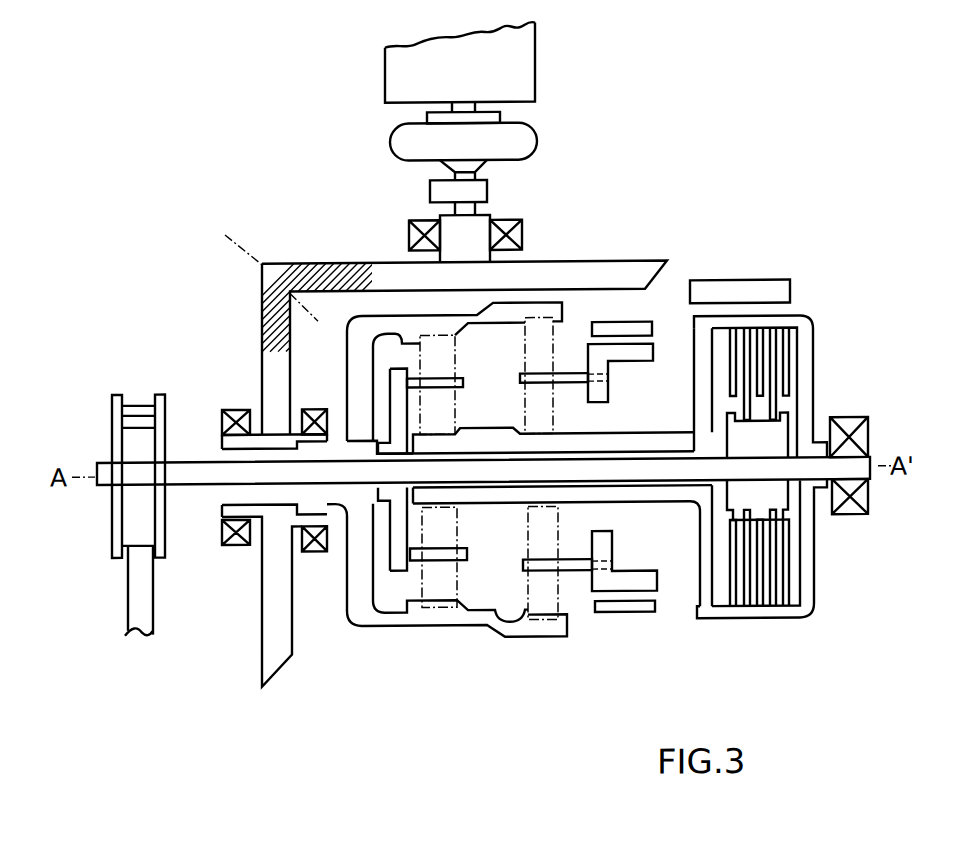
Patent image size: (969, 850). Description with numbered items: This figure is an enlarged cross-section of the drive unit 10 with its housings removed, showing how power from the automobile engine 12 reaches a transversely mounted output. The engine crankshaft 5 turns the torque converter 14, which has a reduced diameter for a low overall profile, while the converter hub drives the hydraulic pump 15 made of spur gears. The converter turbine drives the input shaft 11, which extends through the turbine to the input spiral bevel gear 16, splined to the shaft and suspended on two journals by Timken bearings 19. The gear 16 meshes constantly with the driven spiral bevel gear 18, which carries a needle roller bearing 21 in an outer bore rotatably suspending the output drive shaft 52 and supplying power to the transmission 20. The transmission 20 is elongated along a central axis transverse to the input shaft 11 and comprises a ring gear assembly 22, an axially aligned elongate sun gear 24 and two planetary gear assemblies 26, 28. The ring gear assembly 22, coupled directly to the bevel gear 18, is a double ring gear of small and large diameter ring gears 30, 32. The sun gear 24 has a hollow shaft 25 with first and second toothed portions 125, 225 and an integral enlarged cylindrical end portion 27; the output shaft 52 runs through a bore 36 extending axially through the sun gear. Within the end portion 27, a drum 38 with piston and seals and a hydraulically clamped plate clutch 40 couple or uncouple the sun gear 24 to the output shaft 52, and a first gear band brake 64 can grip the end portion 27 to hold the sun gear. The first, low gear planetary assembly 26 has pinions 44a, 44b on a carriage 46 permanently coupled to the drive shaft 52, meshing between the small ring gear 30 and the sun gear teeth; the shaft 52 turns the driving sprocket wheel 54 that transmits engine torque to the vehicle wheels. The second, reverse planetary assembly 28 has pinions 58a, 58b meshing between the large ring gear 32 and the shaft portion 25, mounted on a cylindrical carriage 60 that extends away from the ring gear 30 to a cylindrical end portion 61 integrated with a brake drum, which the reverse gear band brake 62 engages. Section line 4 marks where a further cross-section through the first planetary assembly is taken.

The drive unit 10 is at (592, 147).
The input shaft 11 is at (476, 210).
The engine 12 is at (472, 78).
The torque converter 14 is at (535, 130).
The hydraulic pump 15 is at (488, 192).
The input spiral bevel gear 16 is at (598, 262).
The driven spiral bevel gear 18 is at (262, 312).
The Timken bearings 19 is at (409, 235).
The transmission 20 is at (668, 623).
The needle roller bearing 21 is at (222, 494).
The ring gear assembly 22 is at (342, 598).
The sun gear 24 is at (632, 502).
The hollow shaft 25 is at (605, 434).
The first planetary gear assembly 26 is at (397, 358).
The enlarged diameter cylindrical end portion 27 is at (800, 318).
The second planetary gear assembly 28 is at (528, 592).
The small diameter ring gear 30 is at (380, 625).
The large diameter ring gear 32 is at (517, 640).
The bore 36 is at (692, 445).
The drum 38 is at (768, 492).
The plate clutch 40 is at (758, 585).
The first planetary gear 44a is at (452, 346).
The first planetary gear 44b is at (460, 552).
The first assembly carriage 46 is at (392, 400).
The output drive shaft 52 is at (188, 460).
The driving sprocket wheel 54 is at (137, 403).
The second reverse planetary gear 58a is at (527, 343).
The second reverse planetary gear 58b is at (465, 548).
The second planetary gear carriage 60 is at (632, 358).
The cylindrical end portion 61 is at (590, 343).
The reverse gear band brake 62 is at (625, 323).
The first gear band brake 64 is at (756, 282).
The first portion of hollow shaft 125 is at (462, 432).
The second portion of hollow shaft 225 is at (560, 434).
The section line 4 is at (452, 295).
The engine crankshaft 5 is at (428, 113).